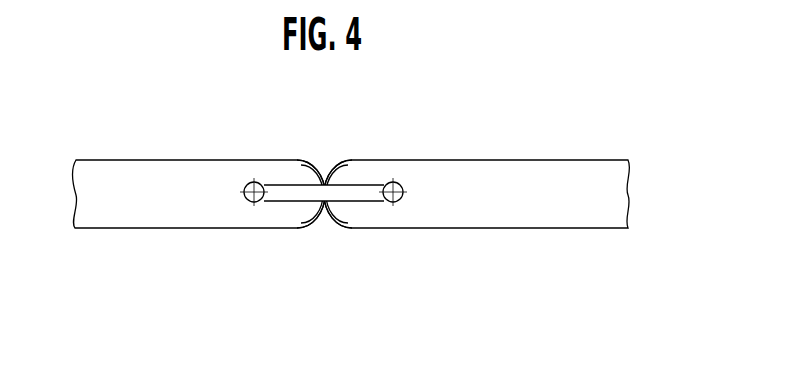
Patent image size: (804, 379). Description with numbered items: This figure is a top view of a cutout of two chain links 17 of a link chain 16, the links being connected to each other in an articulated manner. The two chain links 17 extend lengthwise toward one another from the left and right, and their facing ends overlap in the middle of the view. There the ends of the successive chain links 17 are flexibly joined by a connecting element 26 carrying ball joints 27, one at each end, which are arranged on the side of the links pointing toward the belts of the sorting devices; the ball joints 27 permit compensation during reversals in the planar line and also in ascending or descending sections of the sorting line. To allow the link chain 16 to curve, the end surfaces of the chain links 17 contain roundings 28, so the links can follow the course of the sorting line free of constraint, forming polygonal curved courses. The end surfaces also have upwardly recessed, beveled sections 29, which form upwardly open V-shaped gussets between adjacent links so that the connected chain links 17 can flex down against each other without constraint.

The link chain 16 is at (214, 245).
The chain link 17 is at (138, 179).
The connecting element 26 is at (358, 194).
The ball joint 27 is at (258, 203).
The rounding 28 is at (336, 168).
The beveled section 29 is at (316, 163).